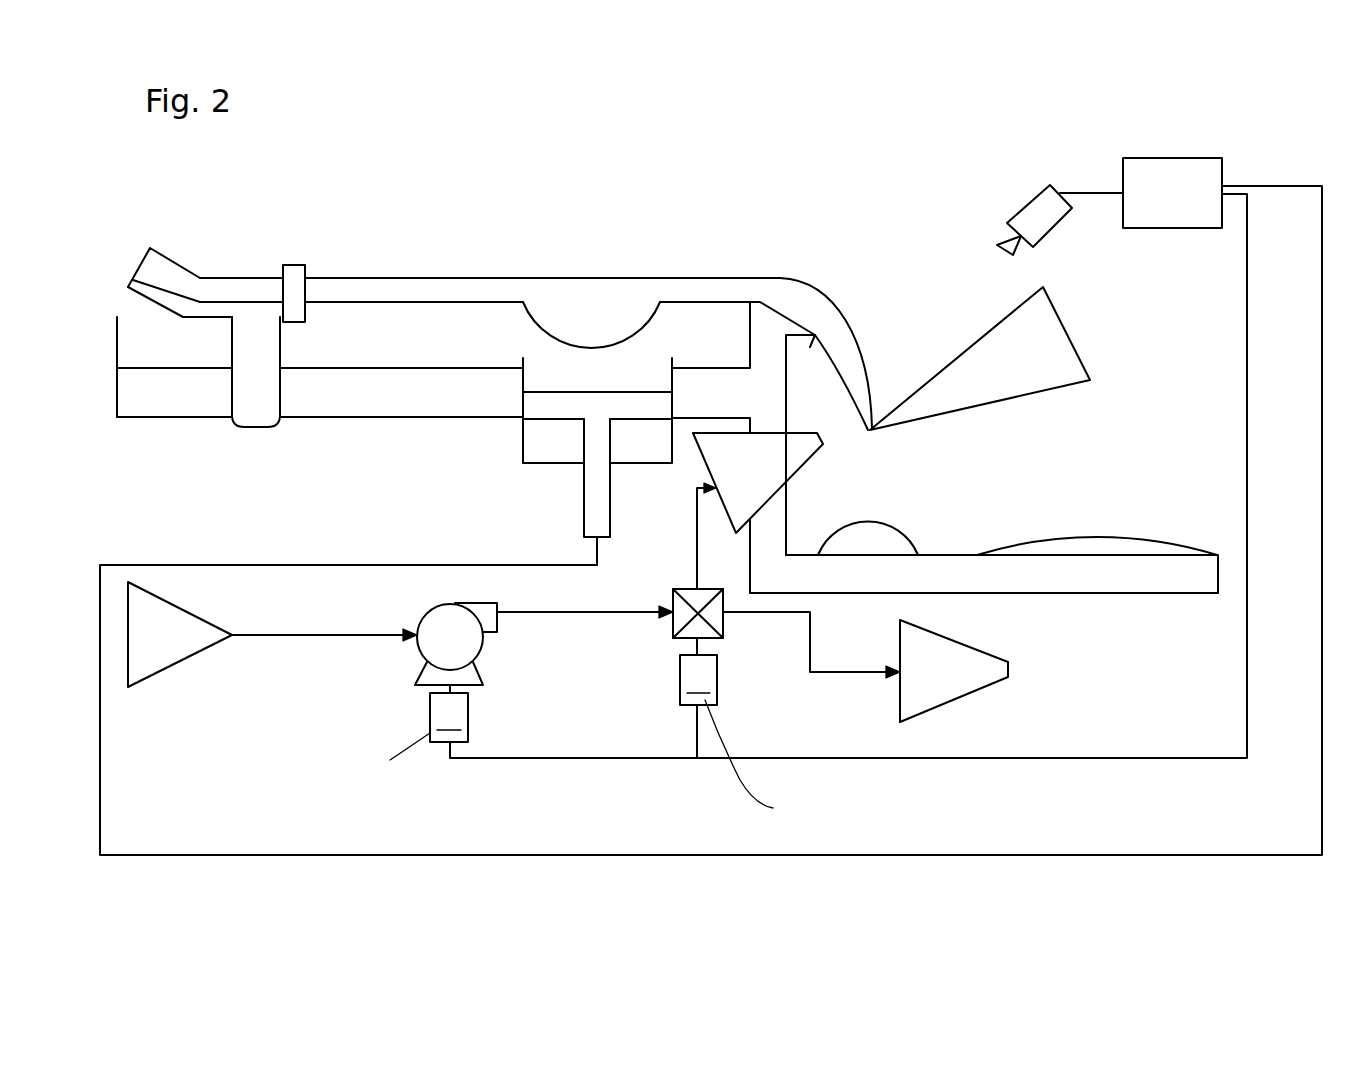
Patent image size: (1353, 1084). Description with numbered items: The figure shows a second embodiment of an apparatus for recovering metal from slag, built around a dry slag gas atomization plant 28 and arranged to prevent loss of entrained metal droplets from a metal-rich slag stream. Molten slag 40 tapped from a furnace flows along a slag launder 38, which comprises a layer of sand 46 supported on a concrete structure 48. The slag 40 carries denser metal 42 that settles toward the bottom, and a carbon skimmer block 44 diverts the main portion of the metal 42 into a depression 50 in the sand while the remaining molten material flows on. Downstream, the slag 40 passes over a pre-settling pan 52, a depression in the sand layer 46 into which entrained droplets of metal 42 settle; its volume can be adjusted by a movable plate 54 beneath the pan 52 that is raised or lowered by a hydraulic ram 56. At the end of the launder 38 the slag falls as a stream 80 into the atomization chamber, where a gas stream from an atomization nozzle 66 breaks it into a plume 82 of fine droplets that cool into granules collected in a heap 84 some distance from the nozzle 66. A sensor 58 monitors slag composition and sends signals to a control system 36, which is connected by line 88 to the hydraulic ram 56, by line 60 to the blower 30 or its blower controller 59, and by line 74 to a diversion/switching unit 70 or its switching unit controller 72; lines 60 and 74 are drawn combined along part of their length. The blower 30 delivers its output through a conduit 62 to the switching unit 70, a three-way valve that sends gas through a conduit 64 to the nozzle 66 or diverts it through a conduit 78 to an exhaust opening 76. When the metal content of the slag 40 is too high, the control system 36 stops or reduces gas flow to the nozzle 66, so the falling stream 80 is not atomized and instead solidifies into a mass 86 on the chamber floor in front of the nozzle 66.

The dry slag gas atomization plant 28 is at (1183, 402).
The blower 30 is at (427, 645).
The control system 36 is at (1200, 160).
The slag launder 38 is at (497, 277).
The molten slag 40 is at (150, 258).
The metal 42 is at (160, 293).
The carbon skimmer block 44 is at (290, 278).
The layer of sand 46 is at (435, 317).
The concrete structure 48 is at (328, 408).
The depression 50 is at (245, 410).
The pre-settling pan 52 is at (638, 312).
The movable plate 54 is at (635, 395).
The hydraulic ram 56 is at (584, 520).
The sensor 58 is at (1045, 200).
The blower controller 59 is at (375, 749).
The line 60 is at (1247, 655).
The conduit 62 is at (533, 615).
The conduit 64 is at (697, 528).
The atomization nozzle 66 is at (812, 449).
The diversion/switching unit 70 is at (685, 589).
The switching unit controller 72 is at (807, 742).
The line 74 is at (697, 729).
The exhaust opening 76 is at (977, 660).
The conduit 78 is at (846, 677).
The falling stream 80 is at (848, 332).
The plume of slag droplets 82 is at (1053, 350).
The heap 84 is at (1177, 543).
The mass 86 is at (903, 542).
The line 88 is at (1073, 856).